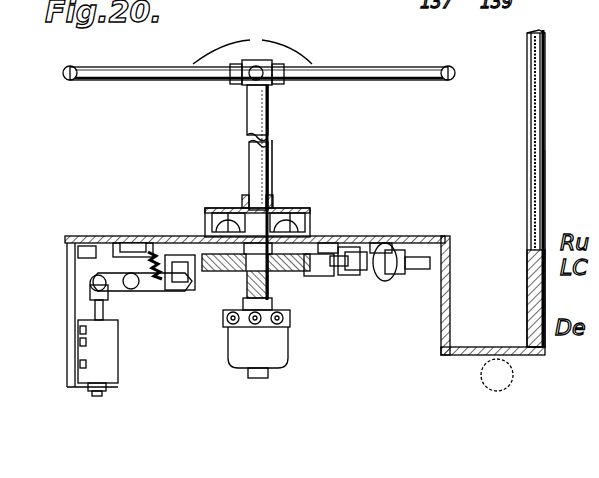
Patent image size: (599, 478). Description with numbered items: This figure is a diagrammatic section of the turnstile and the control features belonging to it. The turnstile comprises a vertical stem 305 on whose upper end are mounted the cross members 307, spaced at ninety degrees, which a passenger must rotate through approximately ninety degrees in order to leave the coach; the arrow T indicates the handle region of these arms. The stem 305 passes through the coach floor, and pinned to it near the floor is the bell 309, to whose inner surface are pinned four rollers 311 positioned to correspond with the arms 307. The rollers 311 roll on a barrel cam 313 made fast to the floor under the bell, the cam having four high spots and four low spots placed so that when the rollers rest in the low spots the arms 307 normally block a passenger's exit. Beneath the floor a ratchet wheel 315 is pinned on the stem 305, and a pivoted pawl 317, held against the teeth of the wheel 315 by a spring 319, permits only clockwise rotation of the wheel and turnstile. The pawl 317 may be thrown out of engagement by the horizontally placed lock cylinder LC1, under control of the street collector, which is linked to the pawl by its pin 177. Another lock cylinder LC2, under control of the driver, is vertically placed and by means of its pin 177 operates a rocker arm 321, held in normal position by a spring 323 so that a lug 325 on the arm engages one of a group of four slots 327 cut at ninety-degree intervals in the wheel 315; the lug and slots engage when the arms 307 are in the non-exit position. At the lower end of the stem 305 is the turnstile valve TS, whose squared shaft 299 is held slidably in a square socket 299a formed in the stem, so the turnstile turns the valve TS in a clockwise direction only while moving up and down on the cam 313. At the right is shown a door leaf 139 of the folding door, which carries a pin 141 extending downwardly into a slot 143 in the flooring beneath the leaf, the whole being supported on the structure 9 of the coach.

The cross members 307 is at (257, 66).
The vertical stem 305 is at (252, 175).
The barrel cam 313 is at (273, 148).
The rollers 311 is at (331, 214).
The bell 309 is at (280, 210).
The spring 319 is at (326, 238).
The pivoted pawl 317 is at (352, 255).
The spring 323 is at (162, 252).
The slots 327 is at (178, 254).
The rocker arm 321 is at (94, 272).
The pin 177 is at (106, 300).
The lug 325 is at (244, 285).
The ratchet wheel 315 is at (292, 275).
The squared shaft 299 is at (272, 300).
The square socket 299a is at (212, 318).
The leaf 139 is at (527, 158).
The frame 9 is at (548, 209).
The pin 141 is at (527, 332).
The slot 143 is at (500, 352).
The lock cylinder LC1 is at (418, 258).
The lock cylinder LC2 is at (112, 358).
The turnstile valve TS is at (268, 355).
The direction arrow T is at (308, 92).